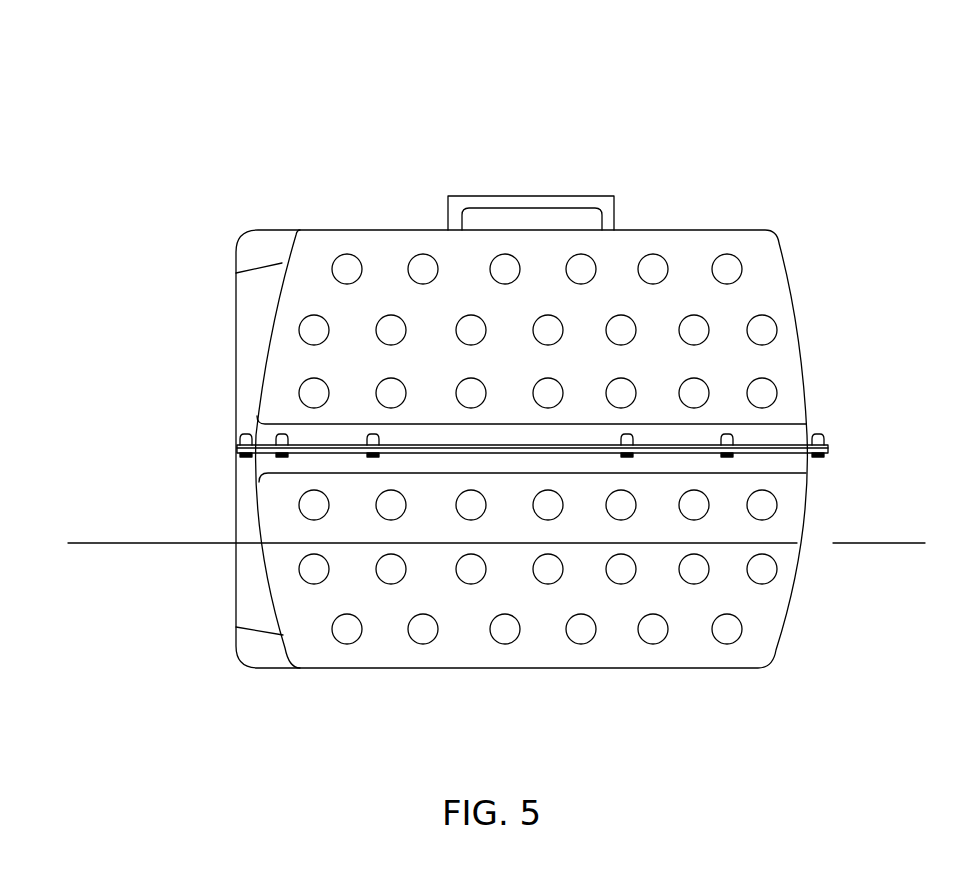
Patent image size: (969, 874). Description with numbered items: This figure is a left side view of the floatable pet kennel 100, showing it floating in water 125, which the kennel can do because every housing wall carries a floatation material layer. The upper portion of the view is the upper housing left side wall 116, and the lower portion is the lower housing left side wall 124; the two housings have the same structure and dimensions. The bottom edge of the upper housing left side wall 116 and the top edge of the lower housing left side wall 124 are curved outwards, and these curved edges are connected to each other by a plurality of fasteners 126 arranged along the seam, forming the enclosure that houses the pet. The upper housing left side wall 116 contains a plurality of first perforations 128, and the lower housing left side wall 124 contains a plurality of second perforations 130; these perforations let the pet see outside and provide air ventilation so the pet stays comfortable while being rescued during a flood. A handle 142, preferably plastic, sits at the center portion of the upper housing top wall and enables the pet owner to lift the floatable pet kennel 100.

The floatable pet kennel 100 is at (178, 97).
The handle 142 is at (530, 196).
The upper housing left side wall 116 is at (783, 353).
The lower housing left side wall 124 is at (770, 602).
The fasteners 126 is at (822, 441).
The first perforations 128 is at (299, 393).
The second perforations 130 is at (299, 505).
The water 125 is at (109, 533).